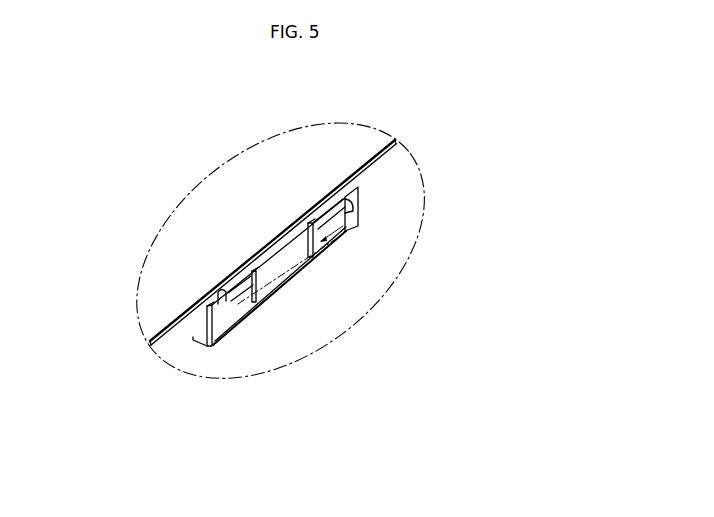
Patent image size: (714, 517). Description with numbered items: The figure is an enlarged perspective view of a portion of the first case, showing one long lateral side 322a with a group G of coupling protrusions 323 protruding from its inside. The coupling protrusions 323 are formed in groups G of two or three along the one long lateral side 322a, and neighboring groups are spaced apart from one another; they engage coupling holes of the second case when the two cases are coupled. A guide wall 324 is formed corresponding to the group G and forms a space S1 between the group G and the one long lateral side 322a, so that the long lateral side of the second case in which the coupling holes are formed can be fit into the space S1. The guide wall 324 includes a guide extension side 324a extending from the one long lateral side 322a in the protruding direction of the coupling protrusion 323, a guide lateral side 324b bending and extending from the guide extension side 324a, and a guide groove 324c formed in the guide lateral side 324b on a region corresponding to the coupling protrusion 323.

The one long lateral side 322a is at (392, 185).
The group G is at (313, 188).
The space S1 is at (267, 238).
The coupling protrusion 323 is at (228, 275).
The guide wall 324 is at (219, 340).
The guide extension side 324a is at (219, 309).
The guide lateral side 324b is at (220, 342).
The guide groove 324c is at (223, 320).